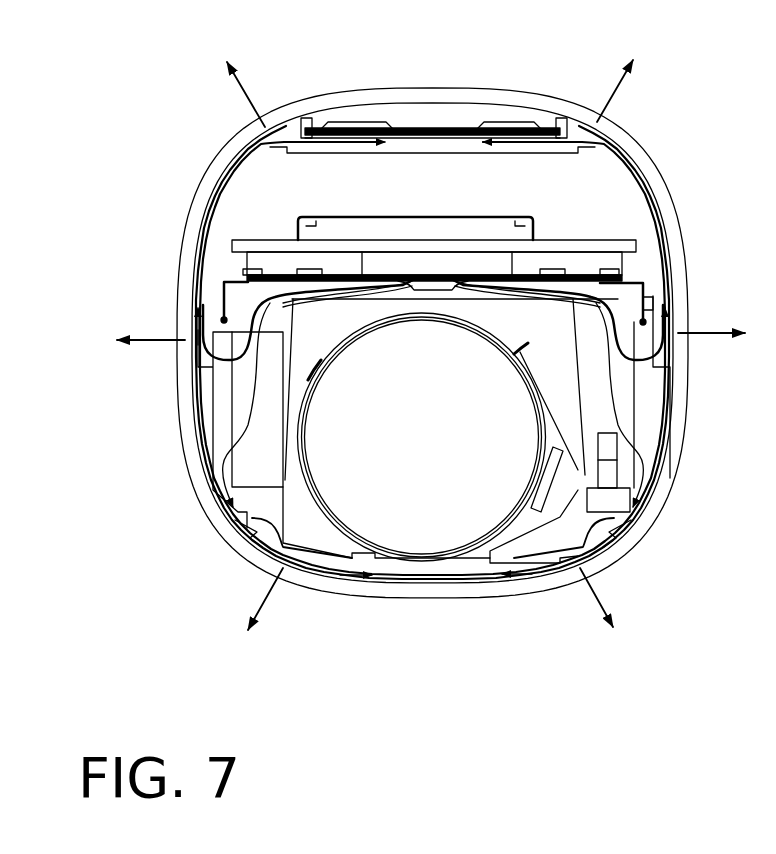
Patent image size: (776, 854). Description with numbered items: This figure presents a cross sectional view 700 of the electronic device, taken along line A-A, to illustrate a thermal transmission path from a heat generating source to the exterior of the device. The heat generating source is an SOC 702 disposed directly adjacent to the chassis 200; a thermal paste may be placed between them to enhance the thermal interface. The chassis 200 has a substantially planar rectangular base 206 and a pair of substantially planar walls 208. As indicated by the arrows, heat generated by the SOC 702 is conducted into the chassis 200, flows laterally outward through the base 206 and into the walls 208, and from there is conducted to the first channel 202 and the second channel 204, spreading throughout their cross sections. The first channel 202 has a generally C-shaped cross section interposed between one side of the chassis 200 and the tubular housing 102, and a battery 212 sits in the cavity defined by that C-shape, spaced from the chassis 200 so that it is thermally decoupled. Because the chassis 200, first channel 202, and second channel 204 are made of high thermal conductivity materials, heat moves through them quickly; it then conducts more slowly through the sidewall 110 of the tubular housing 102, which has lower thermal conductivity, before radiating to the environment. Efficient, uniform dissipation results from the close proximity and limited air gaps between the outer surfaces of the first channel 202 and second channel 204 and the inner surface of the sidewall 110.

The cross sectional view 700 is at (187, 100).
The tubular housing 102 is at (362, 90).
The sidewall 110 is at (212, 180).
The SOC 702 is at (410, 266).
The second channel 204 is at (432, 147).
The substantially planar rectangular base 206 is at (447, 299).
The chassis 200 is at (500, 303).
The first channel 202 is at (213, 397).
The substantially planar walls 208 is at (275, 467).
The battery 212 is at (442, 456).